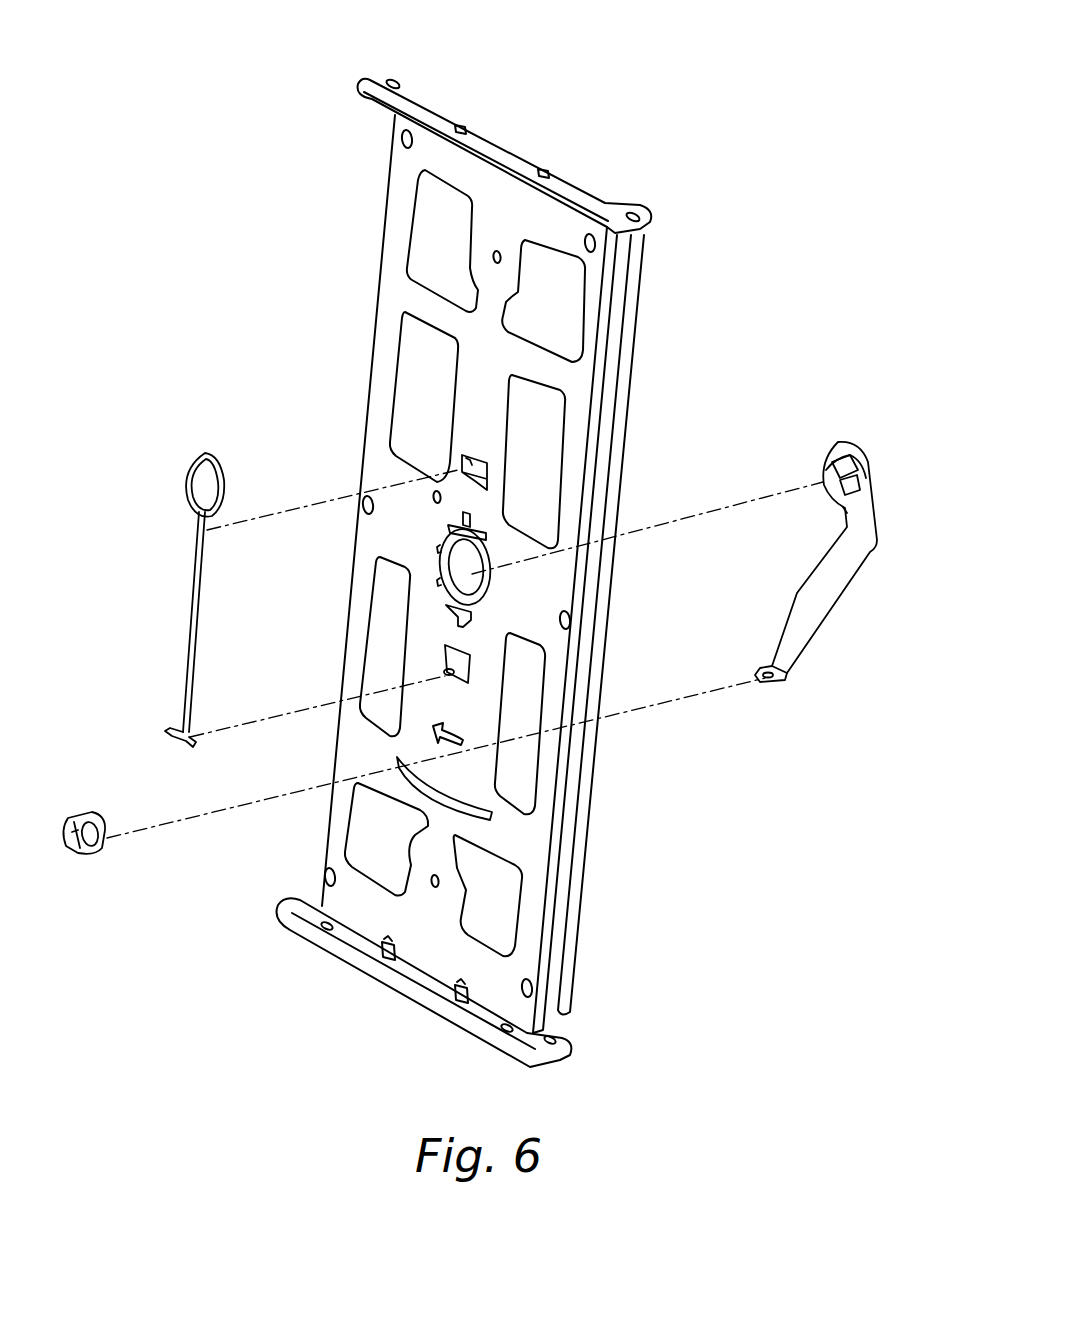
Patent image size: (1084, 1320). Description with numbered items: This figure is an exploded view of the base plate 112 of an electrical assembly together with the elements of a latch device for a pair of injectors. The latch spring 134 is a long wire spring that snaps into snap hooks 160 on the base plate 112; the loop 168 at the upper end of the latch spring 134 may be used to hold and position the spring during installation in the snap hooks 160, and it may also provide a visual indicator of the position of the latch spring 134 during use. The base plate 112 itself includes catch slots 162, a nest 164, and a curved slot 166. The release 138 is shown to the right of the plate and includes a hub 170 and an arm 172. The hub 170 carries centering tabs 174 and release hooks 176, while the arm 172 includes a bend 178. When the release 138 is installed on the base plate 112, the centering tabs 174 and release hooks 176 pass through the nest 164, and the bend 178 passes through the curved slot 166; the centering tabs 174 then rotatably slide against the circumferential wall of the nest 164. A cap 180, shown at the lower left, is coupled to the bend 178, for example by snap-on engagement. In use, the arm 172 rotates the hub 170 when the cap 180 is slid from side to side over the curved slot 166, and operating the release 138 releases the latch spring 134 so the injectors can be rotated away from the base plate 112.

The base plate 112 is at (532, 219).
The latch spring 134 is at (185, 582).
The release 138 is at (841, 552).
The snap hooks 160 is at (473, 461).
The catch slots 162 is at (485, 564).
The nest 164 is at (482, 582).
The curved slot 166 is at (487, 813).
The loop 168 is at (183, 463).
The hub 170 is at (822, 451).
The arm 172 is at (850, 560).
The centering tabs 174 is at (848, 448).
The release hooks 176 is at (858, 496).
The bend 178 is at (769, 680).
The cap 180 is at (84, 843).